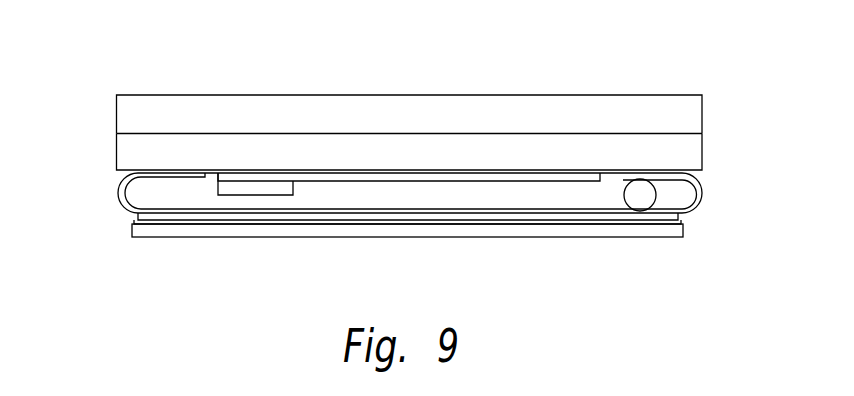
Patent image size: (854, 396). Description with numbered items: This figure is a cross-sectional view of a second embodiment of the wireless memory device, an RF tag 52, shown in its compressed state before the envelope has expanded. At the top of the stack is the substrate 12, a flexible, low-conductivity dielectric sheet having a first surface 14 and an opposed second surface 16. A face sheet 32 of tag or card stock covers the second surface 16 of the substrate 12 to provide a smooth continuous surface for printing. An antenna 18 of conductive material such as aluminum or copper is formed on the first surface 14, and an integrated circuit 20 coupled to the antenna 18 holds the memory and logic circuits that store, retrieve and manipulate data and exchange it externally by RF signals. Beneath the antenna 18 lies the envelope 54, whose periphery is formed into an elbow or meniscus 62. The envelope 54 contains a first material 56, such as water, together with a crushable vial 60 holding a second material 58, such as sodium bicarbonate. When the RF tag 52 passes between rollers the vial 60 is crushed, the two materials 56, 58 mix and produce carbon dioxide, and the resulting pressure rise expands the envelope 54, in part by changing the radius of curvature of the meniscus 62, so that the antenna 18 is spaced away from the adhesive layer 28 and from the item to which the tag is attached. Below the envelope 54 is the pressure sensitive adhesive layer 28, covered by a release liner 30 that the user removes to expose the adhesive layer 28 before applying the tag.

The RF tag 52 is at (86, 103).
The face sheet 32 is at (705, 102).
The second surface 16 is at (693, 133).
The substrate 12 is at (703, 148).
The first surface 14 is at (700, 176).
The integrated circuit 20 is at (262, 196).
The meniscus 62 is at (118, 195).
The antenna 18 is at (460, 183).
The first material 56 is at (523, 198).
The second material 58 is at (625, 185).
The vial 60 is at (632, 192).
The envelope 54 is at (342, 216).
The adhesive layer 28 is at (685, 220).
The release liner 30 is at (663, 238).